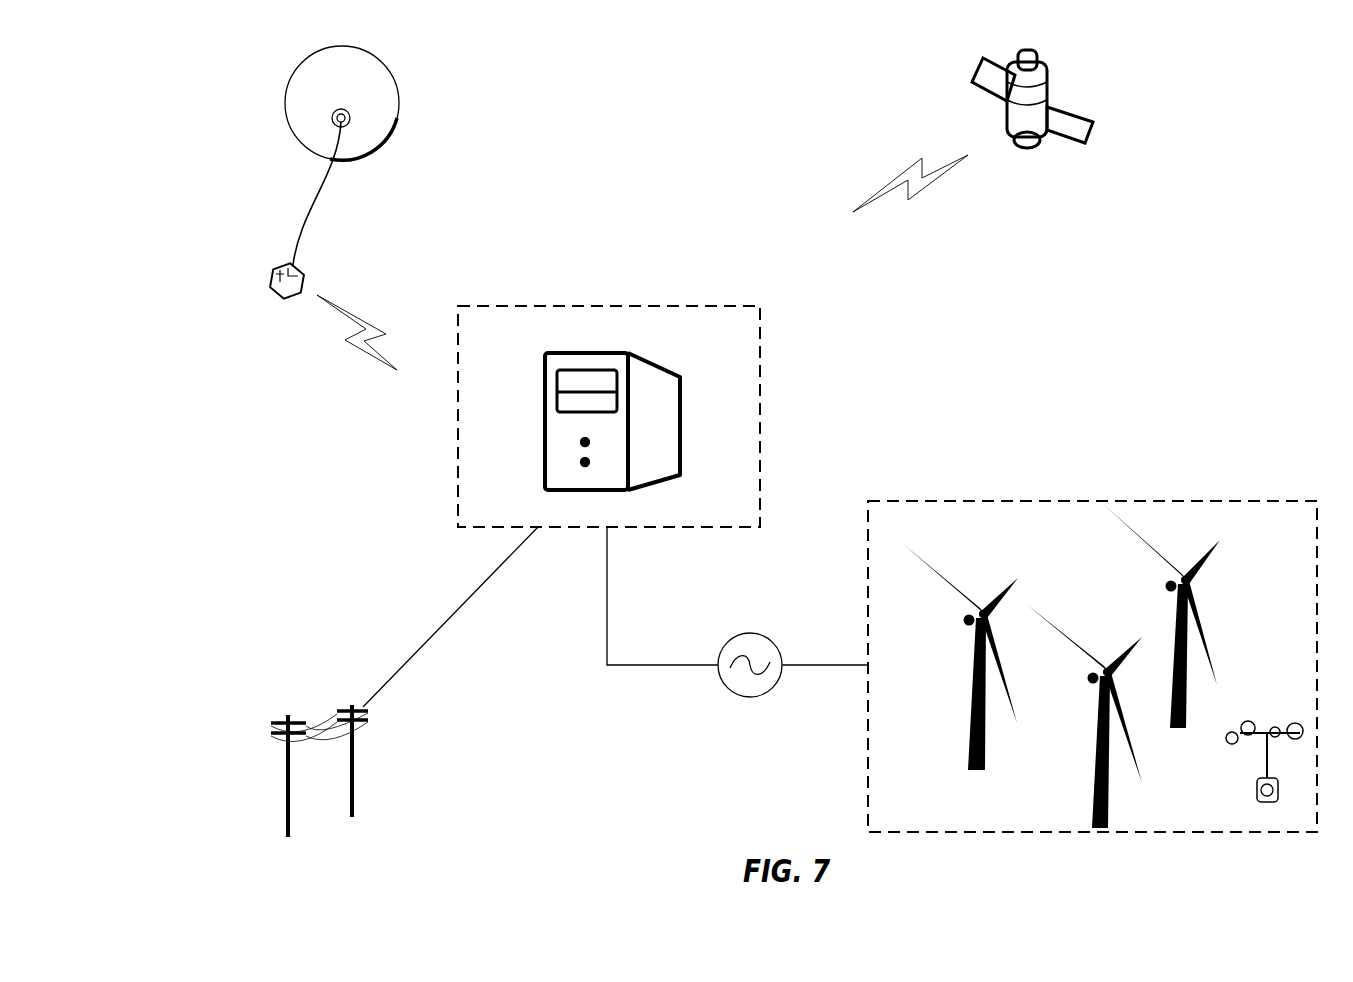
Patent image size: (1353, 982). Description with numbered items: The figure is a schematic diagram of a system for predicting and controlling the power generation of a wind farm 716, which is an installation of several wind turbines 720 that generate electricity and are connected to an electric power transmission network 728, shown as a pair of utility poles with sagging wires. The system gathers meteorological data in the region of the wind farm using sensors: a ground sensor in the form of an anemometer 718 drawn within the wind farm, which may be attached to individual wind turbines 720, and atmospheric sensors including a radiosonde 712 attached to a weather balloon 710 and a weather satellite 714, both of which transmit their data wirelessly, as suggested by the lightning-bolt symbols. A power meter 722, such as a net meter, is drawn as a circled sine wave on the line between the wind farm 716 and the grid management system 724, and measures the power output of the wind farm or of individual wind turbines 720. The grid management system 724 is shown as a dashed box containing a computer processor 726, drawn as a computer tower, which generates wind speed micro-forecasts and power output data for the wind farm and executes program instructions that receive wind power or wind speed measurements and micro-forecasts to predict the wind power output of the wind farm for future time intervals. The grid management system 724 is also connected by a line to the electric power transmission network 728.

The weather balloon 710 is at (405, 91).
The radiosonde 712 is at (268, 299).
The weather satellite 714 is at (1105, 96).
The wind farm 716 is at (1289, 532).
The anemometer 718 is at (1226, 768).
The wind turbine 720 is at (946, 667).
The power meter 722 is at (742, 711).
The grid management system 724 is at (516, 336).
The computer processor 726 is at (685, 369).
The electric power transmission network 728 is at (268, 703).